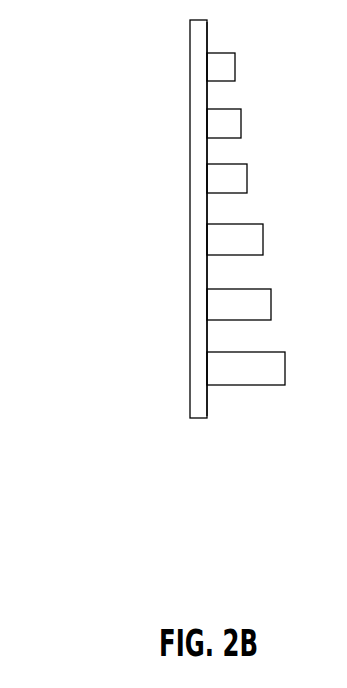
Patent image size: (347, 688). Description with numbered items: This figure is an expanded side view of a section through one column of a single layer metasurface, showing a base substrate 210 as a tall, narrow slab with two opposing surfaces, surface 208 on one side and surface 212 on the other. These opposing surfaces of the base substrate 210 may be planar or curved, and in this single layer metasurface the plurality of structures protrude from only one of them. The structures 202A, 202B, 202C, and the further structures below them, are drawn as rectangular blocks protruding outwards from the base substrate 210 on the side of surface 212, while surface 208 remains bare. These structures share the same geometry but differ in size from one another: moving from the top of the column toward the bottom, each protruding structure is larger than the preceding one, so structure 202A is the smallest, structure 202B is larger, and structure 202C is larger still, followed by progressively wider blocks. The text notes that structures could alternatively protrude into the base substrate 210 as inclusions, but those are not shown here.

The structure 202A is at (223, 70).
The structure 202B is at (229, 124).
The structure 202C is at (234, 183).
The surface 208 is at (190, 343).
The base substrate 210 is at (198, 410).
The surface 212 is at (207, 283).